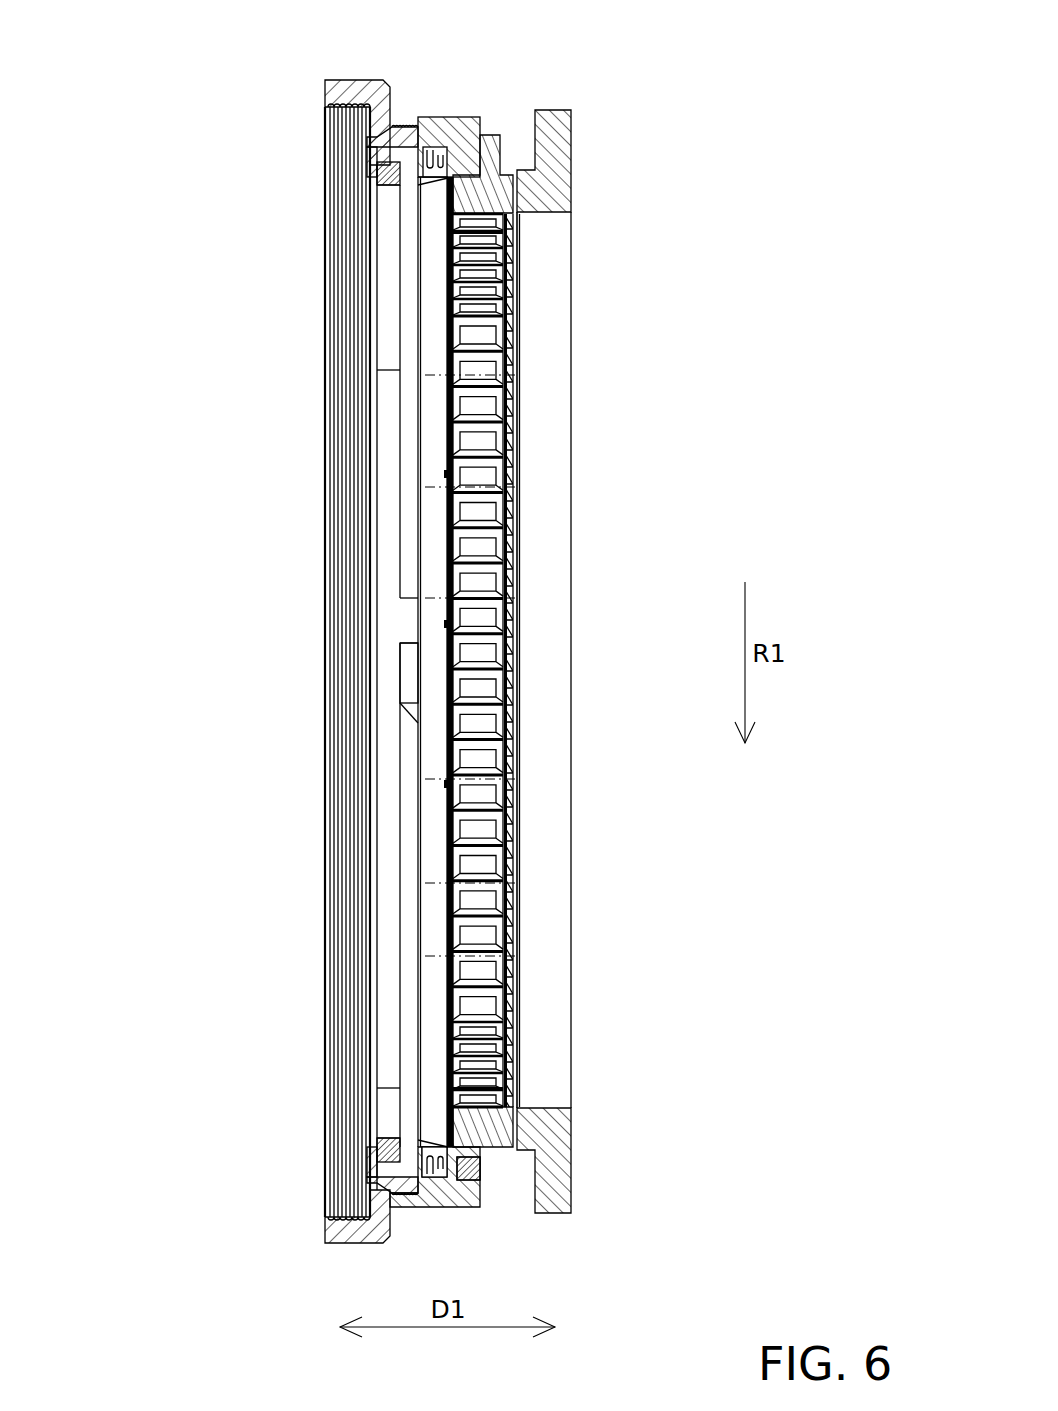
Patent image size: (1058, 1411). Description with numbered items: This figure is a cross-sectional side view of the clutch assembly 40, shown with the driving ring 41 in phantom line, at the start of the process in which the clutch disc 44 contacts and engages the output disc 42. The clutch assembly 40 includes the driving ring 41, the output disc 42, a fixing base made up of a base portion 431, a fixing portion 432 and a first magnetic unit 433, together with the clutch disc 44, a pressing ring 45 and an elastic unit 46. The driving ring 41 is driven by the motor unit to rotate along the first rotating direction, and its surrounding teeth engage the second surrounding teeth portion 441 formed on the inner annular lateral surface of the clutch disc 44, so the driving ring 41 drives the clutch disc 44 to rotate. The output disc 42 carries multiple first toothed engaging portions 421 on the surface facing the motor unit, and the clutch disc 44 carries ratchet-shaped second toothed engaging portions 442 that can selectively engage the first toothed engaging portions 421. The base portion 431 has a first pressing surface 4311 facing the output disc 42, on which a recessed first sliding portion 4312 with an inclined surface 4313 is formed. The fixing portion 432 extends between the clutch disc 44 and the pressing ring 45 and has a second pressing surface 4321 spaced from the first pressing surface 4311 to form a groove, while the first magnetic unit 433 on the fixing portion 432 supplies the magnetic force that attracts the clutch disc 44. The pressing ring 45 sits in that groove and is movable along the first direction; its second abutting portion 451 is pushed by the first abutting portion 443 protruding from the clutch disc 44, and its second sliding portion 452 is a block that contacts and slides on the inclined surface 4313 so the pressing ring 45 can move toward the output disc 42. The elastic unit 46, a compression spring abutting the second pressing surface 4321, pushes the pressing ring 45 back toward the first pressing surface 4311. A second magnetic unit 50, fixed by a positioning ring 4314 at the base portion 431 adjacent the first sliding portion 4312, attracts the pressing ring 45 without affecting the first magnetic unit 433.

The clutch assembly 40 is at (147, 62).
The driving ring 41 is at (525, 353).
The output disc 42 is at (548, 146).
The first toothed engaging portions 421 is at (525, 247).
The base portion 431 is at (351, 96).
The first pressing surface 4311 is at (430, 1005).
The first sliding portion 4312 is at (408, 626).
The inclined surface 4313 is at (403, 721).
The positioning ring 4314 is at (372, 153).
The fixing portion 432 is at (453, 134).
The second pressing surface 4321 is at (436, 1172).
The first magnetic unit 433 is at (485, 1198).
The clutch disc 44 is at (489, 160).
The second surrounding teeth portion 441 is at (485, 394).
The second toothed engaging portions 442 is at (525, 294).
The first abutting portion 443 is at (448, 556).
The pressing ring 45 is at (437, 427).
The second abutting portion 451 is at (445, 628).
The second sliding portion 452 is at (408, 682).
The elastic unit 46 is at (388, 1182).
The second magnetic unit 50 is at (383, 270).